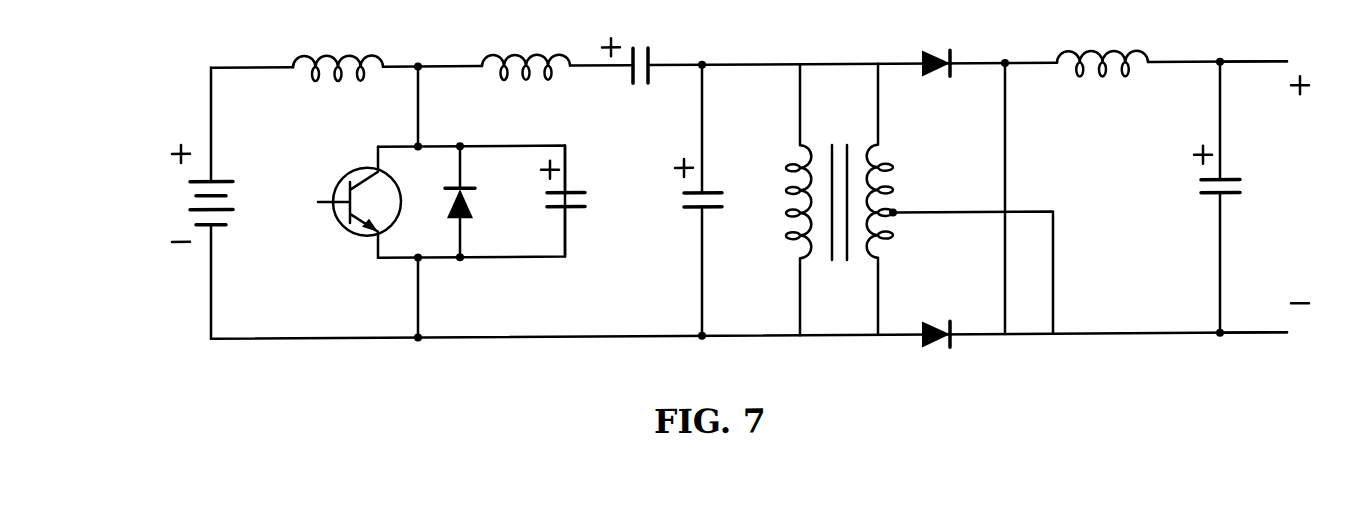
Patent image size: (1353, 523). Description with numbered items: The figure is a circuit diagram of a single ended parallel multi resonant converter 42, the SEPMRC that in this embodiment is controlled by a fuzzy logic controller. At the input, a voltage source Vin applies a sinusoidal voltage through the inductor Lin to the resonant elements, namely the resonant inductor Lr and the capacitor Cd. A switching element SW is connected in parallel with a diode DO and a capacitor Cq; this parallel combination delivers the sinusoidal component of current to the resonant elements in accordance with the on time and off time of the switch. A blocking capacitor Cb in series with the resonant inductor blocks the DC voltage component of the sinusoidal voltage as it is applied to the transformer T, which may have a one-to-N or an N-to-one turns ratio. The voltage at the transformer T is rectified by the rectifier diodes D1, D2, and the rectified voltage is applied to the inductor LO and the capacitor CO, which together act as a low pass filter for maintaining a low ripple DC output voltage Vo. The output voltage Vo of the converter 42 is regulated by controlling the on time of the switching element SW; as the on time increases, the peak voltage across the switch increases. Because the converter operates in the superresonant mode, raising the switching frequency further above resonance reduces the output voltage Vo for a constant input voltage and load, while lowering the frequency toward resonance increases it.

The single ended parallel multi resonant converter 42 is at (212, 385).
The voltage source Vin is at (167, 194).
The inductor Lin is at (338, 47).
The resonant inductor Lr is at (526, 45).
The blocking capacitor Cb is at (637, 49).
The switching element SW is at (339, 203).
The diode DO is at (444, 201).
The capacitor Cq is at (543, 201).
The resonant capacitor Cd is at (678, 201).
The transformer T is at (839, 234).
The rectifier diode D1 is at (940, 49).
The rectifier diode D2 is at (940, 318).
The inductor LO is at (1102, 45).
The capacitor CO is at (1194, 198).
The output voltage Vo is at (1269, 197).